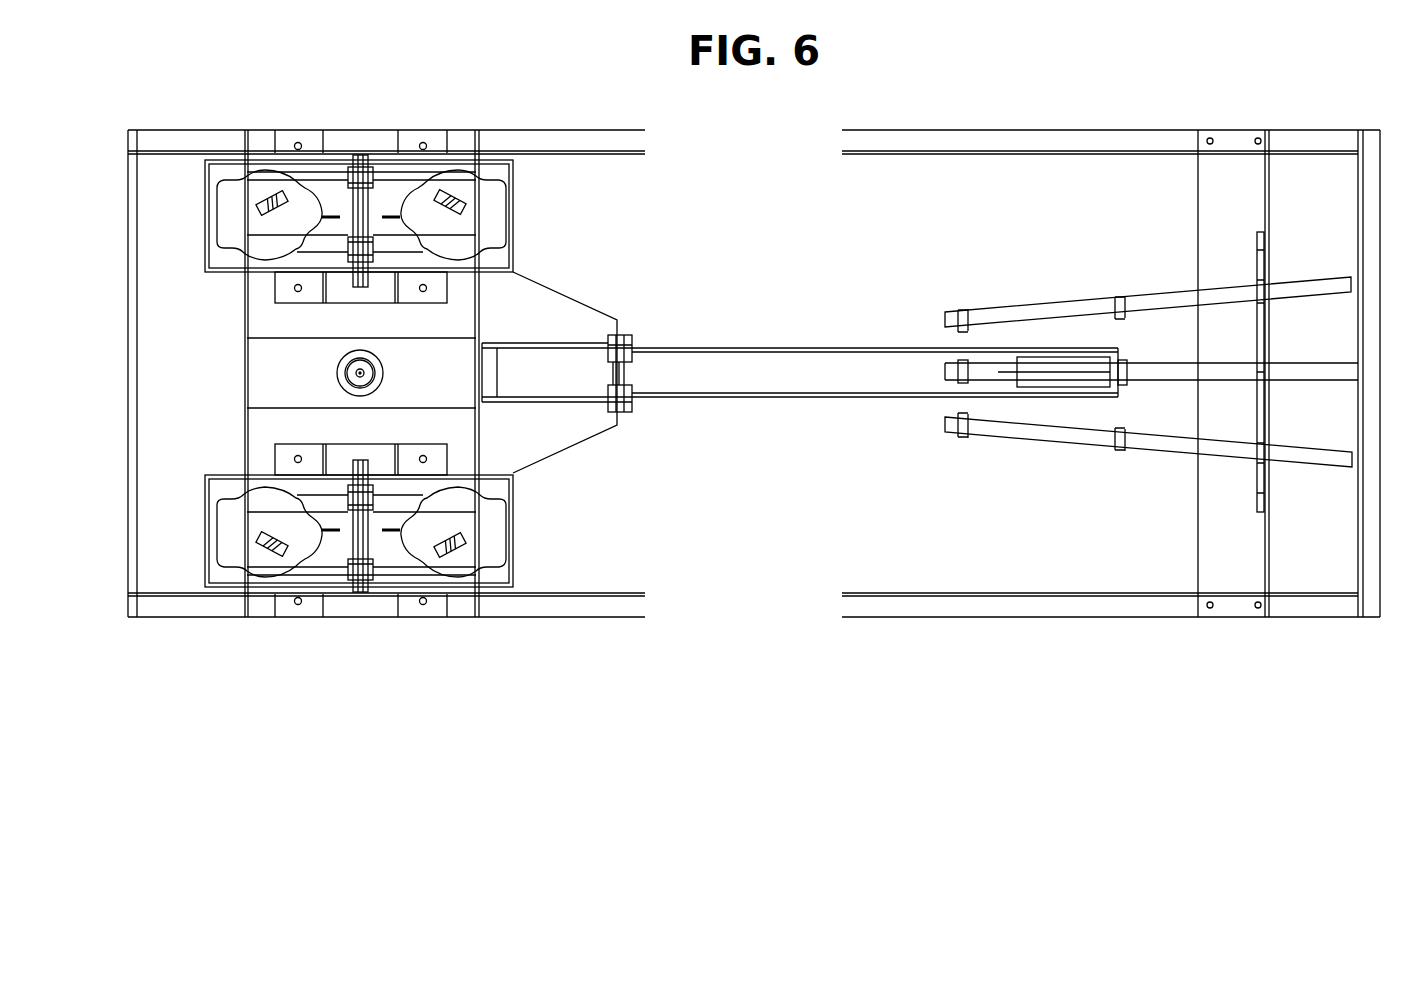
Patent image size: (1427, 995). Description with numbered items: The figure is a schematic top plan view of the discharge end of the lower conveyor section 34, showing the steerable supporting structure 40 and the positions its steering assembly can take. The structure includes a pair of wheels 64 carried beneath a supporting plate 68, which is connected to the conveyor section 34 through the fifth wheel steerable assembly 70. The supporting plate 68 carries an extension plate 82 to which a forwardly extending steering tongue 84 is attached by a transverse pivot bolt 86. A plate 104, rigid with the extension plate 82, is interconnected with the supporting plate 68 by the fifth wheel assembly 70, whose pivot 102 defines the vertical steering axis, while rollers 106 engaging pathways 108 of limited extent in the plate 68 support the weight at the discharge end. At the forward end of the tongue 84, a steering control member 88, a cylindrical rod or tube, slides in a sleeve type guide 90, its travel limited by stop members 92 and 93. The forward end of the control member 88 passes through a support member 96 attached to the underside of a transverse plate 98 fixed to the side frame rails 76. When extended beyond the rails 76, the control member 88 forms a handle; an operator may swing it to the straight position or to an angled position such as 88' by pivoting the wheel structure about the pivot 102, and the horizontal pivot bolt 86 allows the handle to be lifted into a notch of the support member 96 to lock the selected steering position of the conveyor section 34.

The lower conveyor section 34 is at (910, 611).
The steerable supporting structure 40 is at (446, 614).
The wheels 64 is at (493, 212).
The supporting plate 68 is at (262, 322).
The fifth wheel steerable assembly 70 is at (393, 366).
The side rails 76 is at (1081, 135).
The extension plate 82 is at (587, 310).
The steering tongue 84 is at (743, 363).
The transverse pivot bolt 86 is at (630, 372).
The steering control member 88 is at (1151, 392).
The steering control member angular position 88' is at (1148, 460).
The sleeve type guide 90 is at (1035, 380).
The stop member 92 is at (963, 383).
The stop member 93 is at (1118, 358).
The support member 96 is at (1258, 490).
The transverse plate 98 is at (1237, 167).
The pivot 102 is at (348, 368).
The plate 104 is at (448, 402).
The rollers 106 is at (452, 192).
The pathway 108 is at (284, 192).